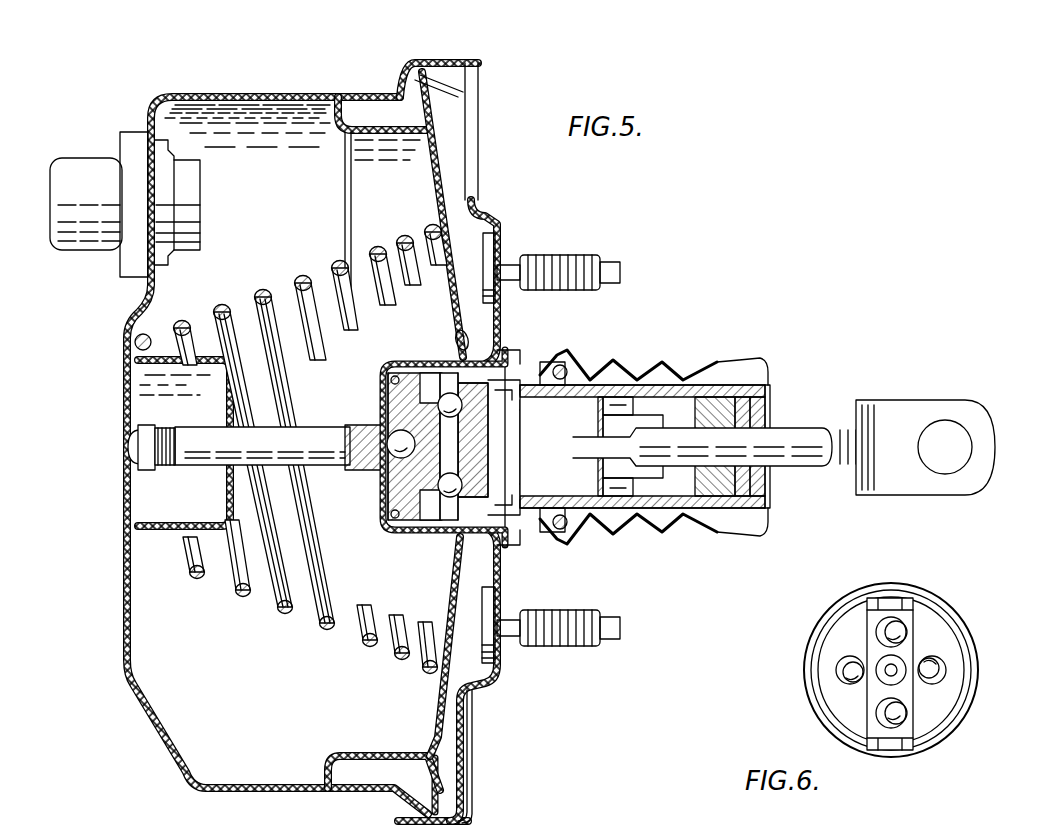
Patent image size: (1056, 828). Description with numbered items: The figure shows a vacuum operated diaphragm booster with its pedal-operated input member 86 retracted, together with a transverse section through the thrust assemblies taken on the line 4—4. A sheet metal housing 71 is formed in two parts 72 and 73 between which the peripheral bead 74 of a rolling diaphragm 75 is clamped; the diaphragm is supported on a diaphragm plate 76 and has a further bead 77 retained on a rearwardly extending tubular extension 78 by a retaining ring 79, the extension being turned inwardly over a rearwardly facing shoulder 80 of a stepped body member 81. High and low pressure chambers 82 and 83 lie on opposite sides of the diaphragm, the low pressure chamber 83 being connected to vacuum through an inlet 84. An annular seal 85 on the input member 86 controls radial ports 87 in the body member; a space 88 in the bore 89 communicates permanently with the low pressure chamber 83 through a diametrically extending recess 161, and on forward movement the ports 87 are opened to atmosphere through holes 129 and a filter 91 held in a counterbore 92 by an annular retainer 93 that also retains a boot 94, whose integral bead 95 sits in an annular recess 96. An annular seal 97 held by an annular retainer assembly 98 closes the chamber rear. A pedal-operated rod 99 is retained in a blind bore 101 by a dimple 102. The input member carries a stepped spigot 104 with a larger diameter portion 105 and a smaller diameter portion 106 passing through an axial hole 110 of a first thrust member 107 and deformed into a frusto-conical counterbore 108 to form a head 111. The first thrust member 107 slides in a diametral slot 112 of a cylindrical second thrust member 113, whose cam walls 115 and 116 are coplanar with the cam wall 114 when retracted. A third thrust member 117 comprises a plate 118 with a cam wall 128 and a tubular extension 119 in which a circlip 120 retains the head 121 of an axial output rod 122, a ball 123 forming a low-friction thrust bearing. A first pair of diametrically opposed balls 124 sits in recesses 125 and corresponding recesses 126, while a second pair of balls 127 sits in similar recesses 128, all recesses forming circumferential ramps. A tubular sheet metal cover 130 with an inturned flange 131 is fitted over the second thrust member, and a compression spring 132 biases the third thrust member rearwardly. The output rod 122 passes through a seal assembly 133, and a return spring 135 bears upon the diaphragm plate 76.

In FIG. 5, the sheet metal housing 71 is at (286, 90).
In FIG. 5, the housing part 72 is at (240, 95).
In FIG. 5, the housing part 73 is at (503, 228).
In FIG. 5, the peripheral bead 74 is at (402, 72).
In FIG. 5, the rolling diaphragm 75 is at (434, 172).
In FIG. 5, the diaphragm plate 76 is at (372, 132).
In FIG. 5, the further bead 77 is at (445, 368).
In FIG. 5, the tubular extension 78 is at (505, 350).
In FIG. 5, the retaining ring 79 is at (455, 340).
In FIG. 5, the rearwardly facing shoulder 80 is at (530, 355).
In FIG. 5, the stepped body member 81 is at (710, 368).
In FIG. 5, the high pressure chamber 82 is at (500, 240).
In FIG. 5, the low pressure chamber 83 is at (240, 193).
In FIG. 5, the inlet 84 is at (86, 182).
In FIG. 5, the annular seal 85 is at (595, 535).
In FIG. 5, the pedal-operated input member 86 is at (625, 535).
In FIG. 5, the radial ports 87 is at (590, 355).
In FIG. 5, the space 88 is at (560, 370).
In FIG. 5, the bore 89 is at (685, 530).
In FIG. 5, the filter 91 is at (740, 520).
In FIG. 5, the counterbore 92 is at (715, 525).
In FIG. 5, the annular retainer 93 is at (766, 510).
In FIG. 5, the boot 94 is at (760, 370).
In FIG. 5, the integral bead 95 is at (625, 352).
In FIG. 5, the annular recess 96 is at (660, 360).
In FIG. 5, the annular seal 97 is at (615, 362).
In FIG. 5, the annular retainer assembly 98 is at (596, 610).
In FIG. 5, the pedal-operated rod 99 is at (798, 440).
In FIG. 5, the blind bore 101 is at (640, 440).
In FIG. 5, the dimple 102 is at (650, 378).
In FIG. 5, the stepped spigot 104 is at (540, 560).
In FIG. 6, the stepped spigot 104 is at (900, 665).
In FIG. 5, the larger diameter portion 105 is at (490, 480).
In FIG. 5, the smaller diameter portion 106 is at (440, 378).
In FIG. 5, the first thrust member 107 is at (478, 612).
In FIG. 6, the first thrust member 107 is at (872, 614).
In FIG. 5, the frusto-conical counterbore 108 is at (398, 380).
In FIG. 5, the axial hole 110 is at (500, 540).
In FIG. 5, the head 111 is at (395, 520).
In FIG. 6, the diametral slot 112 is at (920, 618).
In FIG. 5, the second thrust member 113 is at (505, 640).
In FIG. 6, the second thrust member 113 is at (942, 700).
In FIG. 6, the cam wall 114 is at (868, 645).
In FIG. 6, the cam wall 115 is at (825, 680).
In FIG. 6, the cam wall 116 is at (935, 660).
In FIG. 5, the third thrust member 117 is at (430, 530).
In FIG. 5, the plate 118 is at (445, 560).
In FIG. 5, the tubular extension 119 is at (385, 505).
In FIG. 5, the circlip 120 is at (380, 490).
In FIG. 5, the head 121 is at (385, 470).
In FIG. 5, the axial output rod 122 is at (215, 440).
In FIG. 5, the ball 123 is at (342, 408).
In FIG. 5, the first pair of diametrically opposed balls 124 is at (378, 268).
In FIG. 6, the first pair of diametrically opposed balls 124 is at (885, 625).
In FIG. 5, the recesses 125 is at (485, 440).
In FIG. 6, the recesses 125 is at (905, 625).
In FIG. 5, the recesses 126 is at (312, 285).
In FIG. 5, the pair of diametrically opposed balls 127 is at (358, 400).
In FIG. 6, the pair of diametrically opposed balls 127 is at (838, 668).
In FIG. 5, the cam wall 128 is at (480, 600).
In FIG. 6, the cam wall 128 is at (835, 660).
In FIG. 5, the holes 129 is at (603, 410).
In FIG. 5, the tubular sheet metal cover 130 is at (425, 545).
In FIG. 5, the inturned flange 131 is at (410, 540).
In FIG. 5, the compression spring 132 is at (385, 388).
In FIG. 5, the seal assembly 133 is at (240, 592).
In FIG. 5, the return spring 135 is at (150, 333).
In FIG. 5, the diametrically extending recess 161 is at (510, 282).
In FIG. 5, the section line 4 is at (470, 318).